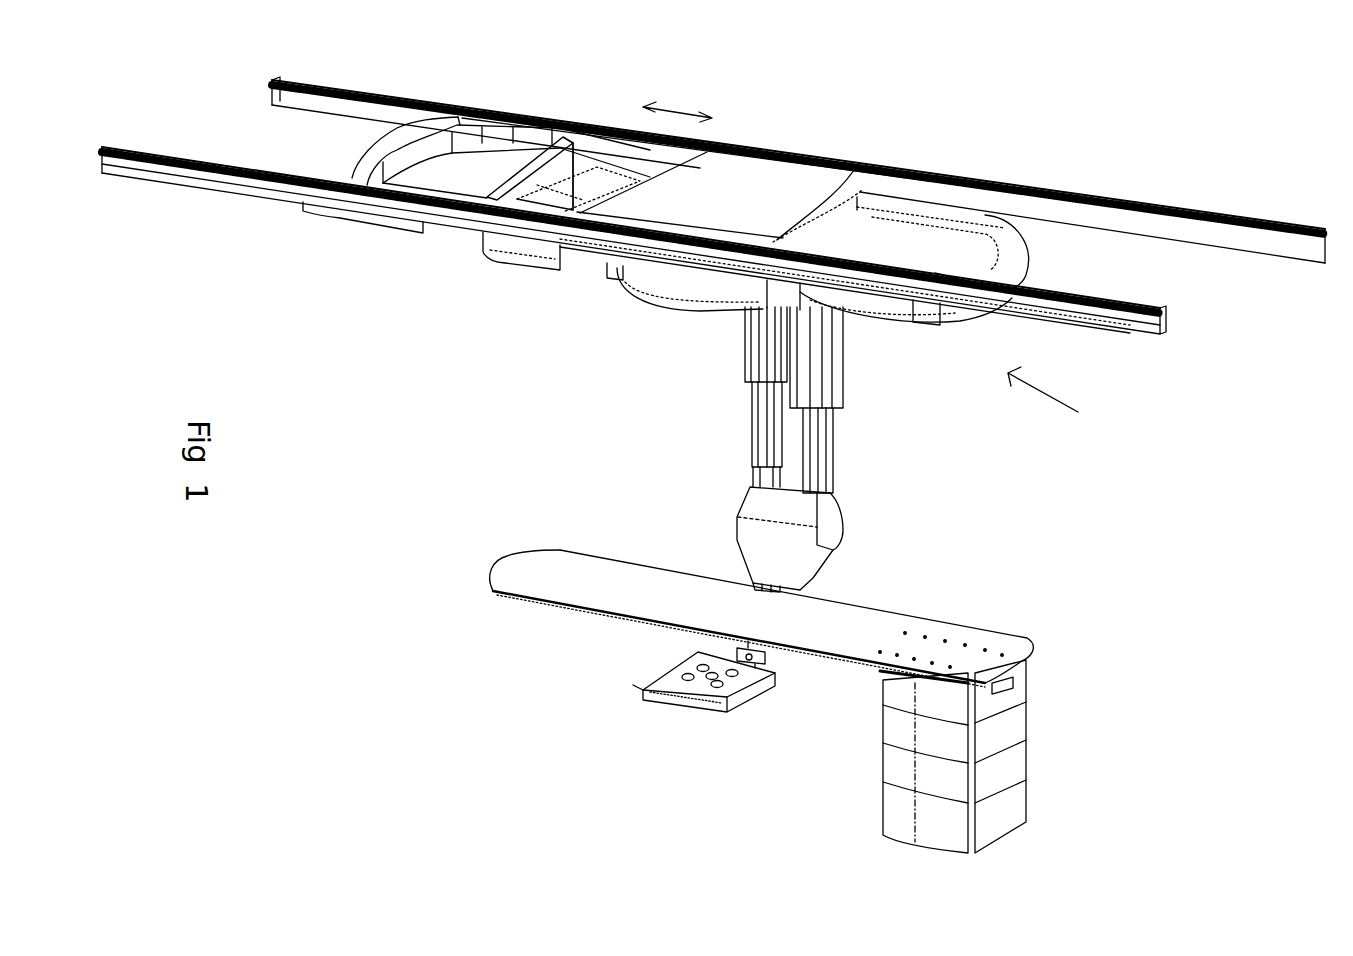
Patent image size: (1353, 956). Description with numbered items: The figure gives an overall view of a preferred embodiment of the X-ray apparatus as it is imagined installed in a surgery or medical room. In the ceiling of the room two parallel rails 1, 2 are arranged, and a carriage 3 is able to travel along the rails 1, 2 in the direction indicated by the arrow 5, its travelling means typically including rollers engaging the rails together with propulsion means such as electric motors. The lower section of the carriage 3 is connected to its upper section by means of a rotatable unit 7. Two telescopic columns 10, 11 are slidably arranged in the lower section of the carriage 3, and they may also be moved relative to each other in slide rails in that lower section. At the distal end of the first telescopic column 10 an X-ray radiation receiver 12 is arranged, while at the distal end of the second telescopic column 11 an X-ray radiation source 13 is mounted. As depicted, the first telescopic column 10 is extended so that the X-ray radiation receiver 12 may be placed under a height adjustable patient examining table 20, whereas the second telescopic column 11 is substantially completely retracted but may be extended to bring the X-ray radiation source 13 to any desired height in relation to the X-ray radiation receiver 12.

The rail 1 is at (1088, 214).
The rail 2 is at (1127, 331).
The carriage 3 is at (1053, 402).
The arrow 5 is at (679, 105).
The rotatable unit 7 is at (868, 195).
The first telescopic column 10 is at (738, 428).
The second telescopic column 11 is at (849, 430).
The X-ray radiation receiver 12 is at (755, 706).
The X-ray radiation source 13 is at (828, 527).
The patient examining table 20 is at (964, 655).